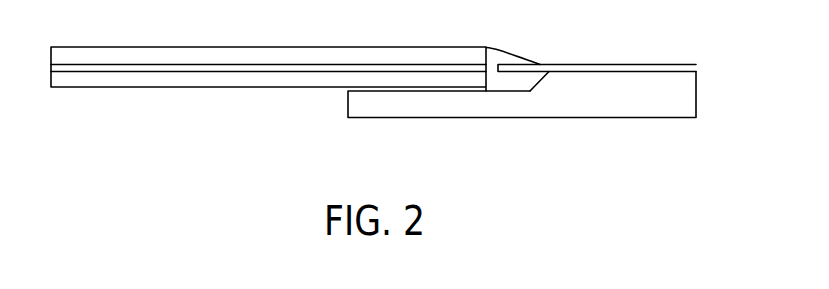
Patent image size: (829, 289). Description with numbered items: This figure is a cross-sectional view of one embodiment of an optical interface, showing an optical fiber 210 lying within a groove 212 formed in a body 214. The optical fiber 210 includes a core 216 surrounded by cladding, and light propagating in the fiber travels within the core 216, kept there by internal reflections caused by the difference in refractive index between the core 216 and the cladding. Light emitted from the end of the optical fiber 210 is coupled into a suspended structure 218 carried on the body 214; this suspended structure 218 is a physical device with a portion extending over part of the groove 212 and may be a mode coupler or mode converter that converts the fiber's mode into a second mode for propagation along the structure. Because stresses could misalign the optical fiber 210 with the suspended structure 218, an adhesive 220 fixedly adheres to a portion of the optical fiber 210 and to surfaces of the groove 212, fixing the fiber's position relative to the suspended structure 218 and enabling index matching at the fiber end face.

The optical fiber 210 is at (190, 47).
The groove 212 is at (542, 78).
The body 214 is at (684, 118).
The core 216 is at (210, 72).
The suspended structure 218 is at (546, 64).
The adhesive 220 is at (489, 47).